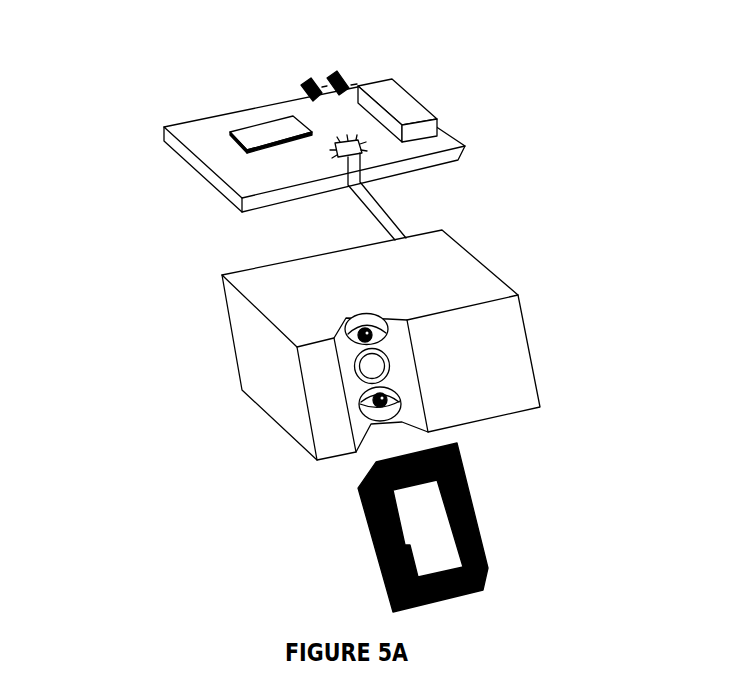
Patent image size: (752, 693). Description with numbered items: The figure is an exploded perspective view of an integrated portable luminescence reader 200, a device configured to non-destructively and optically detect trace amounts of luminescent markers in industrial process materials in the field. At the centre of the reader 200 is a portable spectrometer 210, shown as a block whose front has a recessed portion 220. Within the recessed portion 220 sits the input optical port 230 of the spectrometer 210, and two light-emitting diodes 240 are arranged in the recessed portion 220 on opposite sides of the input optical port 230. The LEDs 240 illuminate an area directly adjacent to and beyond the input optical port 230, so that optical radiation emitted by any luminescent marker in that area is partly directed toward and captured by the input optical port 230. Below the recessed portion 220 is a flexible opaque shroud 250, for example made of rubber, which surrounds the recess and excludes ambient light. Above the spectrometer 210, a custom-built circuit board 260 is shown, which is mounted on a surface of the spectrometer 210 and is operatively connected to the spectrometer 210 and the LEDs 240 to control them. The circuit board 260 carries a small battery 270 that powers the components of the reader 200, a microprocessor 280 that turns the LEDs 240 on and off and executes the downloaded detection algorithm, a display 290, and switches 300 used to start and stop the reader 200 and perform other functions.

The integrated portable luminescence reader 200 is at (553, 86).
The portable spectrometer 210 is at (248, 323).
The front recessed portion 220 is at (363, 300).
The input optical port 230 is at (342, 383).
The light-emitting diodes 240 is at (401, 384).
The flexible opaque shroud 250 is at (345, 539).
The circuit board 260 is at (139, 132).
The battery 270 is at (415, 96).
The microprocessor 280 is at (319, 158).
The display 290 is at (251, 130).
The switches 300 is at (310, 68).